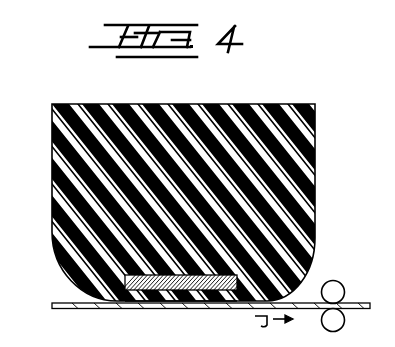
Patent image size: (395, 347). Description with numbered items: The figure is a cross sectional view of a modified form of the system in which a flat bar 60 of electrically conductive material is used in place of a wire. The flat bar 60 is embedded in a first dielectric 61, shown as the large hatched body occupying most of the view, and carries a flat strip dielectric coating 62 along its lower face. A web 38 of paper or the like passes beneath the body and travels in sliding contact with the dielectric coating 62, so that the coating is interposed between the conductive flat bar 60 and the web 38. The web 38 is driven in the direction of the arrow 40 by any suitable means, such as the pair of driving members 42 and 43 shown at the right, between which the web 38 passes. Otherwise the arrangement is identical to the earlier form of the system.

The first dielectric 61 is at (277, 108).
The flat bar 60 is at (238, 275).
The flat strip dielectric coating 62 is at (148, 304).
The web 38 is at (63, 310).
The driving means 42 is at (341, 284).
The driving means 43 is at (344, 322).
The arrow 40 is at (261, 325).